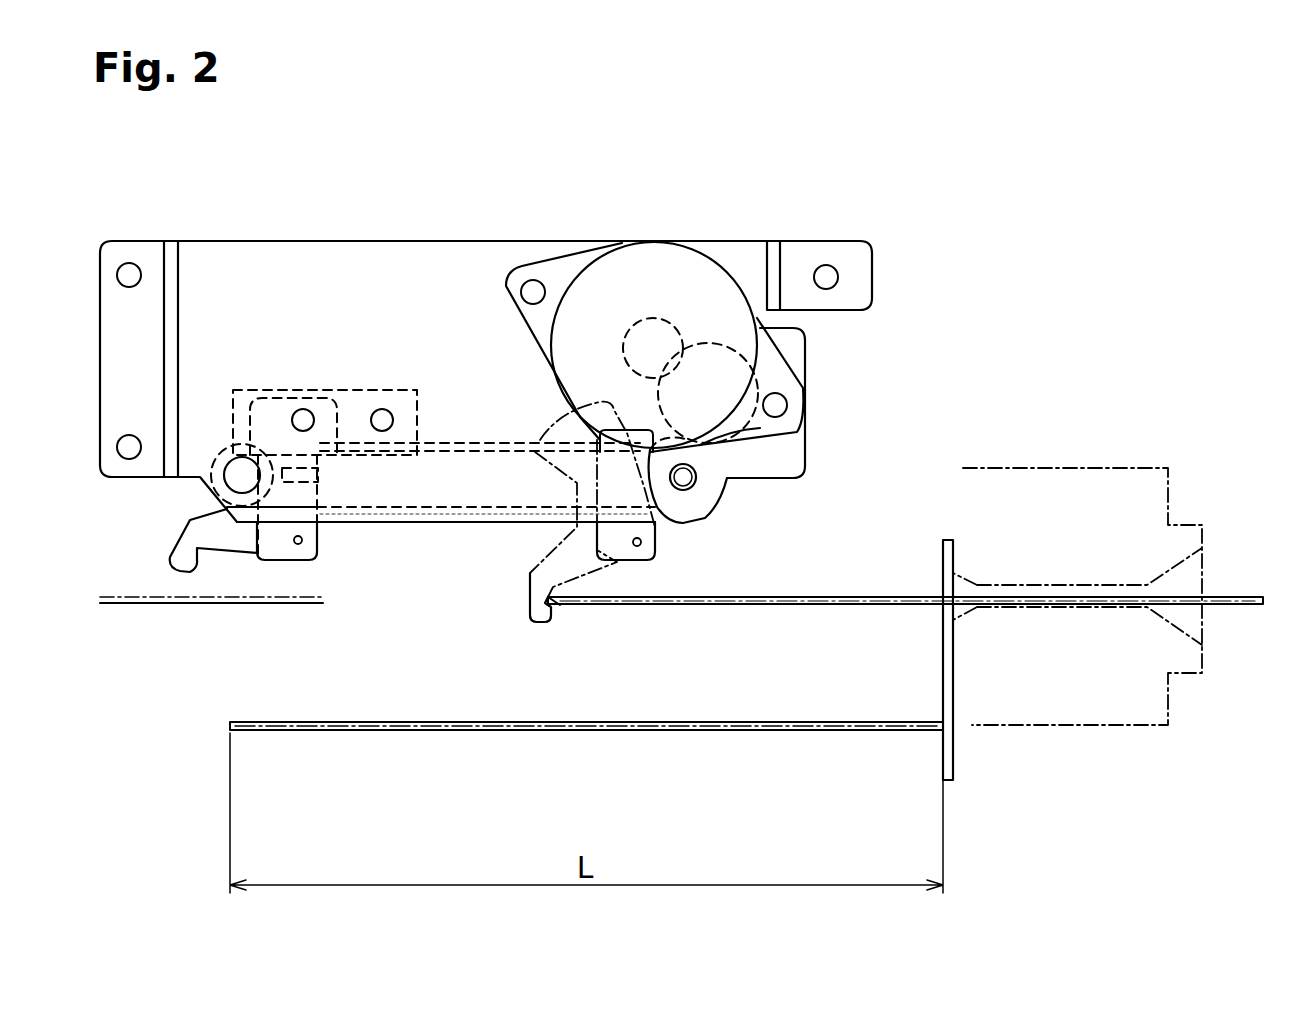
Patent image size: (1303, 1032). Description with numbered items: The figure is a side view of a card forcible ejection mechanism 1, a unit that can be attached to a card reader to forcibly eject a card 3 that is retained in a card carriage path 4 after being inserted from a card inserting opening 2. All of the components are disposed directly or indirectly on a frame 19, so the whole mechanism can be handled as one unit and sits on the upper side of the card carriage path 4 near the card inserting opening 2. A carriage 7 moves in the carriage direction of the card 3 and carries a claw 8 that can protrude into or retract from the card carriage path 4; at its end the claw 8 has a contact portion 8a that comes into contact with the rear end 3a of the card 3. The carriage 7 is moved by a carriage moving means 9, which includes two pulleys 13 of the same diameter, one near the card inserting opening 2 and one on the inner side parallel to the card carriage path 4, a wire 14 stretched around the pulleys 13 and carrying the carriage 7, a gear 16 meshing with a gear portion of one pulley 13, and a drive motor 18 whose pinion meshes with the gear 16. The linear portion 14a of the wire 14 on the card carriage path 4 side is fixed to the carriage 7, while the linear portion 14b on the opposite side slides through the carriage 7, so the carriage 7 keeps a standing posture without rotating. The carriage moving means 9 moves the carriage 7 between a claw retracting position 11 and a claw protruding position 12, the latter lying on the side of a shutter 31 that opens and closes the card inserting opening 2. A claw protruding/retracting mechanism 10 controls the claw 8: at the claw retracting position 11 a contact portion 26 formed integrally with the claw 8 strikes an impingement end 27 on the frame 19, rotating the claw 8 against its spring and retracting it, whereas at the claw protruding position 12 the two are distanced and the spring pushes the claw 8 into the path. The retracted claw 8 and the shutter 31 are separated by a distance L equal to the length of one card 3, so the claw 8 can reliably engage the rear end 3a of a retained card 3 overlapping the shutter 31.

The card forcible ejection mechanism 1 is at (492, 207).
The card inserting opening 2 is at (1047, 485).
The card 3 is at (1237, 600).
The rear end of the card 3a is at (557, 603).
The card carriage path 4 is at (123, 612).
The carriage 7 is at (323, 560).
The claw 8 is at (213, 512).
The contact portion 8a is at (213, 568).
The carriage moving means 9 is at (757, 463).
The claw protruding/retracting mechanism 10 is at (255, 343).
The claw retracting position 11 is at (291, 660).
The claw protruding position 12 is at (305, 690).
The pulleys 13 is at (227, 443).
The wire 14 is at (418, 530).
The linear portion of the wire on the card carriage path side 14a is at (457, 518).
The linear portion of the wire on the opposite side 14b is at (463, 440).
The gear 16 is at (760, 376).
The drive motor 18 is at (658, 263).
The frame 19 is at (399, 270).
The contact portion 26 is at (253, 400).
The impingement end 27 is at (234, 390).
The shutter 31 is at (950, 783).